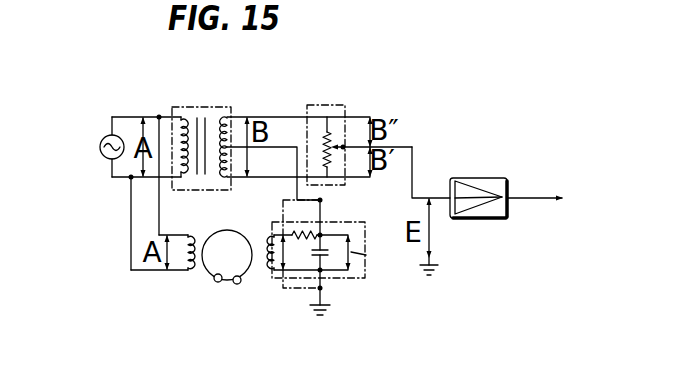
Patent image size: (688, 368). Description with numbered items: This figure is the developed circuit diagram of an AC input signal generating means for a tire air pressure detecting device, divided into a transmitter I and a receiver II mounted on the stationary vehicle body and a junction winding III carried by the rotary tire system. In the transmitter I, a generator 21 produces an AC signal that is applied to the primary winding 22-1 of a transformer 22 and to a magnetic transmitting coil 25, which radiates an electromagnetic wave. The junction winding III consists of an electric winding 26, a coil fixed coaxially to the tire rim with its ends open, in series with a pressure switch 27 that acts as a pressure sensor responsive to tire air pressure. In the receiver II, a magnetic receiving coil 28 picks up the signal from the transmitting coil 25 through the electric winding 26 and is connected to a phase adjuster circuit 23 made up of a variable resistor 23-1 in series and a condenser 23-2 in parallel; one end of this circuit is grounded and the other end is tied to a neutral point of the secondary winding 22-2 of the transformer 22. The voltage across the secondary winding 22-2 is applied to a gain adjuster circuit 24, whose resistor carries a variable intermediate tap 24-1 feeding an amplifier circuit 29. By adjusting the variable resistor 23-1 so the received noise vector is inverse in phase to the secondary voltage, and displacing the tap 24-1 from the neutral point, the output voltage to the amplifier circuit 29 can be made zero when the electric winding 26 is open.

The generator 21 is at (99, 147).
The transformer 22 is at (200, 112).
The primary winding 22-1 is at (178, 106).
The secondary winding 22-2 is at (228, 107).
The phase adjuster circuit 23 is at (311, 245).
The variable resistor 23-1 is at (296, 226).
The condenser 23-2 is at (327, 257).
The gain adjuster circuit 24 is at (328, 115).
The variable intermediate tap 24-1 is at (333, 125).
The magnetic transmitting coil 25 is at (193, 273).
The electric winding 26 is at (223, 230).
The pressure switch 27 is at (236, 286).
The magnetic receiving coil 28 is at (263, 237).
The amplifier circuit 29 is at (478, 177).
The transmitter I is at (156, 113).
The receiver II is at (394, 142).
The junction winding III is at (214, 286).